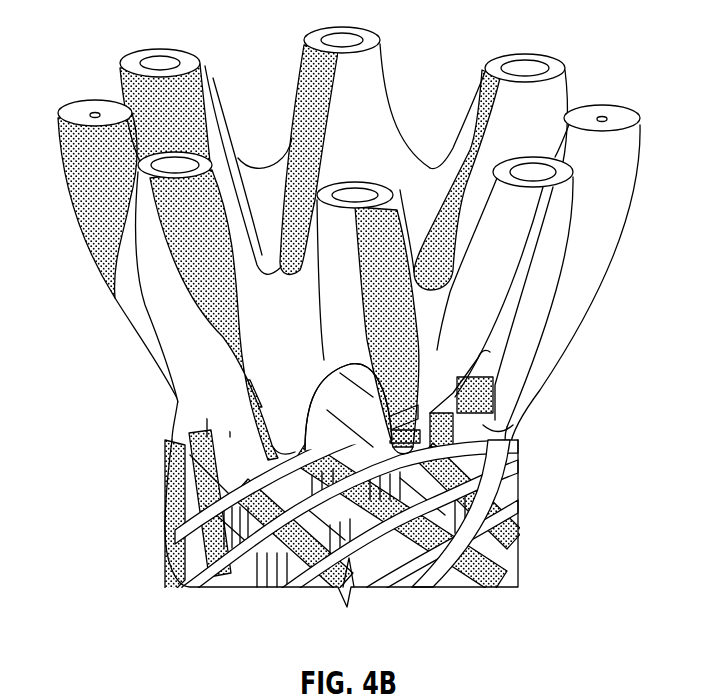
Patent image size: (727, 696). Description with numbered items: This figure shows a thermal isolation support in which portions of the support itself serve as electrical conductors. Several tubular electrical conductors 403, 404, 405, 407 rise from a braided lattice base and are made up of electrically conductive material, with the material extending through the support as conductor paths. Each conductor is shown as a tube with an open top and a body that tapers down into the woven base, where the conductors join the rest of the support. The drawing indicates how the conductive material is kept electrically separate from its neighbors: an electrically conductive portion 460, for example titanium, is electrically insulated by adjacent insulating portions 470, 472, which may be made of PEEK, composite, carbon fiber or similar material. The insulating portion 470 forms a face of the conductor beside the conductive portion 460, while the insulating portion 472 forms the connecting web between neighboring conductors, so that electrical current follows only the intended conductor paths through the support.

The electrical conductor 403 is at (600, 104).
The electrical conductor 404 is at (521, 54).
The electrical conductor 405 is at (340, 26).
The electrical conductor 407 is at (96, 100).
The electrically conductive portion 460 is at (300, 68).
The insulating portion 470 is at (390, 87).
The insulating portion 472 is at (212, 78).